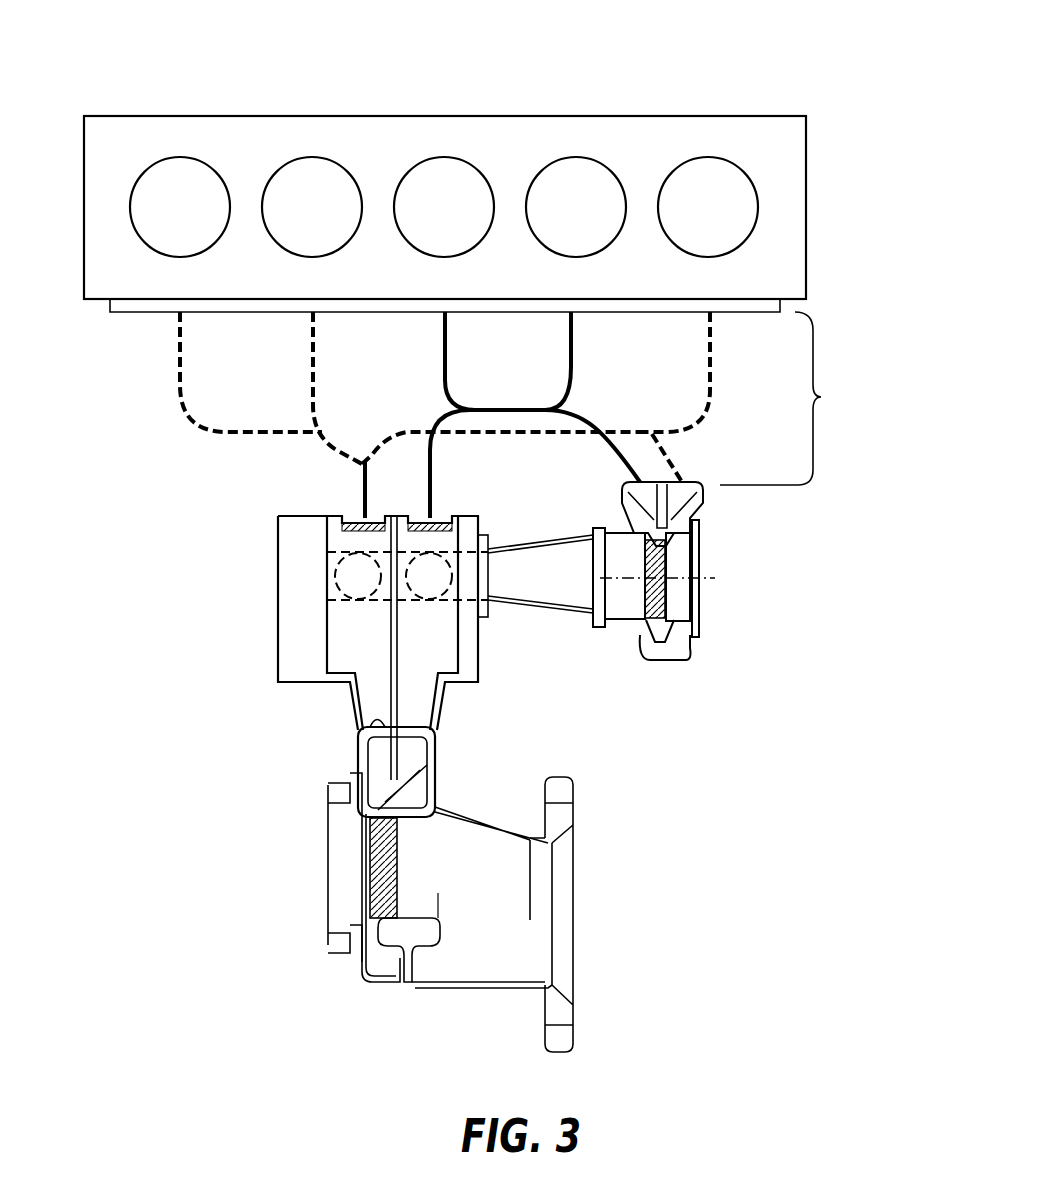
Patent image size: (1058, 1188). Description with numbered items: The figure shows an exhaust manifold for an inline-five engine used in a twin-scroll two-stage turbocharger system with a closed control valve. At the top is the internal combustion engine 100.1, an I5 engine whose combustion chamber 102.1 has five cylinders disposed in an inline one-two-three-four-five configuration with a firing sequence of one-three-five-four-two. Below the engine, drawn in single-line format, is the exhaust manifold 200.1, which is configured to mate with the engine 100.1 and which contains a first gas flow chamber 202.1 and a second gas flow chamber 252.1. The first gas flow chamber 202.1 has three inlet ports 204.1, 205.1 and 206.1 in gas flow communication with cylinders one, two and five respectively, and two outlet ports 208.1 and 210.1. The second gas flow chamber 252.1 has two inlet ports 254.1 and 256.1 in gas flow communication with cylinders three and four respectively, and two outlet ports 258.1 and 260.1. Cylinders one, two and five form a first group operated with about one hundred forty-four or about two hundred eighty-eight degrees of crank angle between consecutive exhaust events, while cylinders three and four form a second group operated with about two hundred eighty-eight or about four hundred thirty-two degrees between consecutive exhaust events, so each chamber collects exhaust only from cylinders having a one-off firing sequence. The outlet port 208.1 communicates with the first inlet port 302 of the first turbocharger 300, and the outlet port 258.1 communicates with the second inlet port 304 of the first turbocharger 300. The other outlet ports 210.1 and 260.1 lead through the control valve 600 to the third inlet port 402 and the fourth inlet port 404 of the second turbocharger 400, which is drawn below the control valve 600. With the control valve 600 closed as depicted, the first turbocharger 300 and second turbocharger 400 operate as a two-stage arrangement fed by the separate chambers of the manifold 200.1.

The internal combustion engine 100.1 is at (623, 110).
The combustion chamber 102.1 is at (313, 157).
The exhaust manifold 200.1 is at (822, 397).
The first gas flow chamber 202.1 is at (330, 450).
The first inlet port 204.1 is at (178, 365).
The second inlet port 205.1 is at (310, 326).
The third inlet port 206.1 is at (712, 350).
The outlet port 208.1 is at (682, 468).
The outlet port 210.1 is at (362, 505).
The second gas flow chamber 252.1 is at (483, 398).
The fourth inlet port 254.1 is at (443, 334).
The fifth inlet port 256.1 is at (575, 350).
The outlet port 258.1 is at (630, 465).
The outlet port 260.1 is at (435, 505).
The first turbocharger 300 is at (630, 604).
The first inlet port 302 is at (700, 503).
The second inlet port 304 is at (620, 503).
The second turbocharger 400 is at (412, 899).
The third inlet port 402 is at (377, 757).
The fourth inlet port 404 is at (422, 757).
The control valve 600 is at (277, 628).